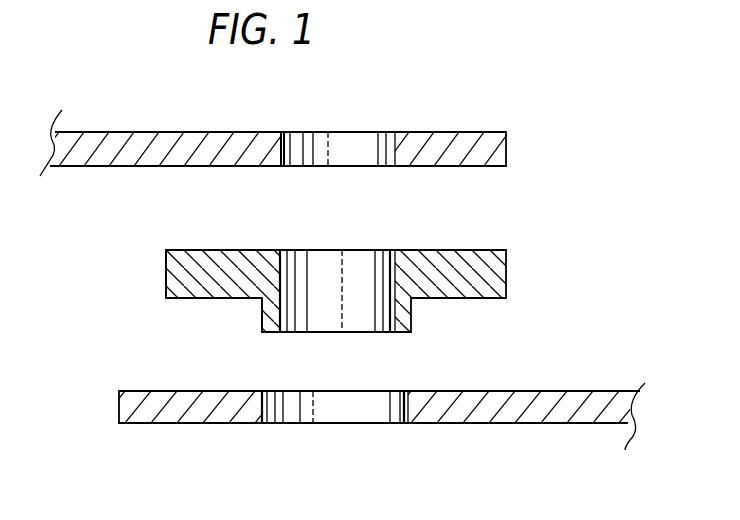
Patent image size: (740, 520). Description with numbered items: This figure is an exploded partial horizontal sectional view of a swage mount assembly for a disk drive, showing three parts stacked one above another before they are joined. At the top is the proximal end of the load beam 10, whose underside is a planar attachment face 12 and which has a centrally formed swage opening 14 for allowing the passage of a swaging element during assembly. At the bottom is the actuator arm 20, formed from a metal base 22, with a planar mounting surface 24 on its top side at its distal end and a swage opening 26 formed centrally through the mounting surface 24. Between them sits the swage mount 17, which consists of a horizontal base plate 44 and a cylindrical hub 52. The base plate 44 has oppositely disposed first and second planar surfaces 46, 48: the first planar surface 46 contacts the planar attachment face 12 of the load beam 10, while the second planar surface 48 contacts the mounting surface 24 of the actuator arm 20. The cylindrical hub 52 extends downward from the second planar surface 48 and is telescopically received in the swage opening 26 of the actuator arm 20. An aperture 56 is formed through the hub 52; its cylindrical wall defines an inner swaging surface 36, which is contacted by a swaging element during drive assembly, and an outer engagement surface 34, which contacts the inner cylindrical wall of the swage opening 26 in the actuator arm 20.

The load beam 10 is at (175, 145).
The planar attachment face 12 is at (472, 167).
The swage opening 14 is at (340, 145).
The swage mount 17 is at (490, 277).
The actuator arm 20 is at (572, 403).
The metal base 22 is at (462, 425).
The planar mounting surface 24 is at (193, 390).
The swage opening 26 is at (328, 410).
The outer engagement surface 34 is at (411, 313).
The inner swaging surface 36 is at (277, 297).
The horizontal base plate 44 is at (165, 271).
The first planar surface 46 is at (250, 247).
The second planar surface 48 is at (242, 297).
The cylindrical hub 52 is at (402, 328).
The aperture 56 is at (333, 265).